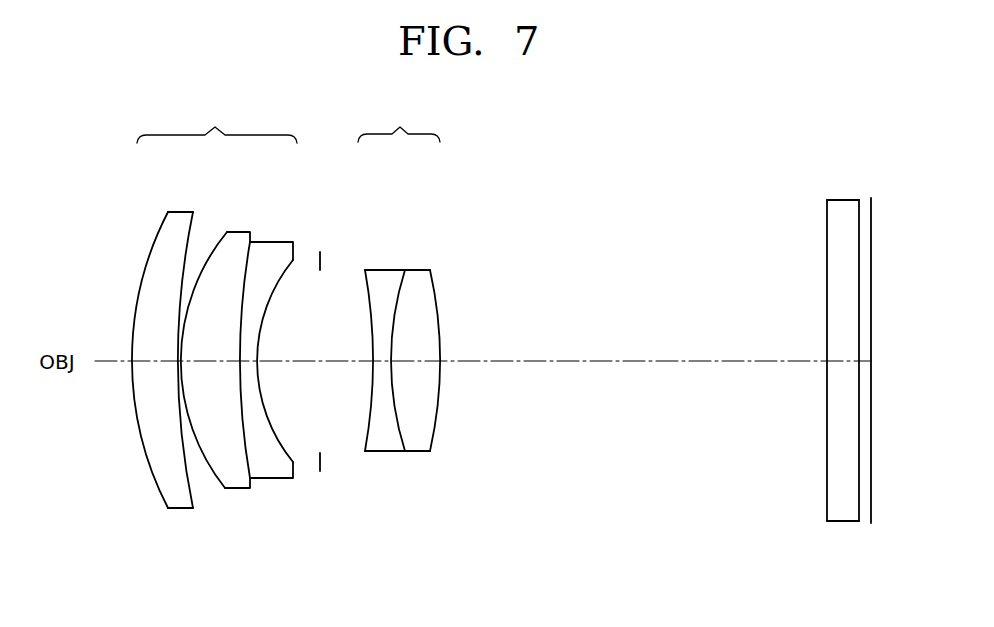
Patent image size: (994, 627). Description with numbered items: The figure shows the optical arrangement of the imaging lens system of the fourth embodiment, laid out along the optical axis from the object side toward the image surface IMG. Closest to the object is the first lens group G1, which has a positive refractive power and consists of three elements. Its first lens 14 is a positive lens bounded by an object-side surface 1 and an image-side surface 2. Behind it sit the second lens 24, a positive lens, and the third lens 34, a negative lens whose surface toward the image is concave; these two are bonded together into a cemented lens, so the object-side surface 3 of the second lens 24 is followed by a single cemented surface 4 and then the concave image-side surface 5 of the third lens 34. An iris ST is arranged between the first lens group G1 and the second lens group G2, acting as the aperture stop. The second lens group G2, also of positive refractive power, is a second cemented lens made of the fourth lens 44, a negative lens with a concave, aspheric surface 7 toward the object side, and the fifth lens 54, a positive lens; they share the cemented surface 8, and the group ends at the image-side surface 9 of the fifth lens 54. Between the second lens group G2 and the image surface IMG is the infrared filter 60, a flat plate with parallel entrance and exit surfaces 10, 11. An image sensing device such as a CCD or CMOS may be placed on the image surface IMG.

The first lens 14 is at (183, 213).
The object-side surface of the first lens 1 is at (158, 488).
The image-side surface of the first lens 2 is at (195, 488).
The second lens 24 is at (236, 235).
The object-side surface of the second lens 3 is at (215, 478).
The cemented surface between the second and third lenses 4 is at (248, 458).
The third lens 34 is at (278, 250).
The image-side surface of the third lens 5 is at (297, 442).
The iris ST is at (320, 257).
The fourth lens 44 is at (379, 275).
The object-side surface of the fourth lens 7 is at (367, 433).
The cemented surface between the fourth and fifth lenses 8 is at (402, 440).
The fifth lens 54 is at (420, 275).
The image-side surface of the fifth lens 9 is at (437, 432).
The infrared filter 60 is at (838, 207).
The object-side surface of the infrared filter 10 is at (827, 490).
The image-side surface of the infrared filter 11 is at (856, 502).
The image surface IMG is at (868, 230).
The first lens group G1 is at (217, 119).
The second lens group G2 is at (399, 119).